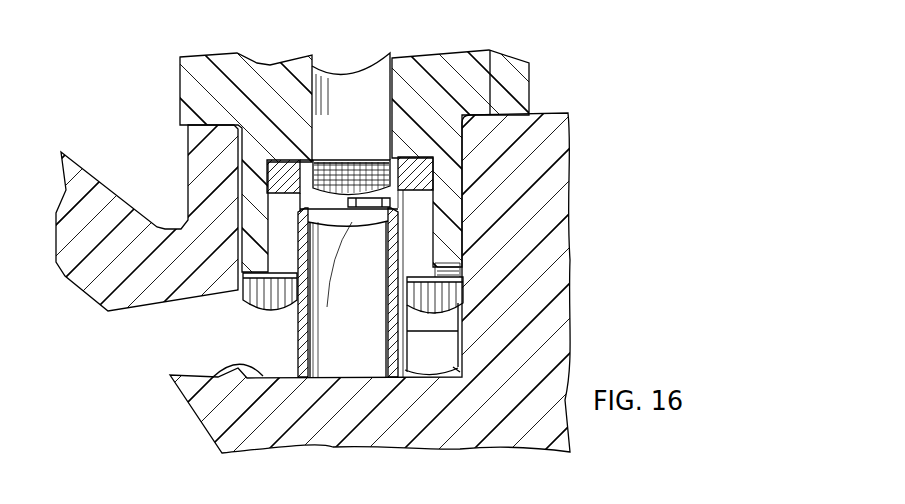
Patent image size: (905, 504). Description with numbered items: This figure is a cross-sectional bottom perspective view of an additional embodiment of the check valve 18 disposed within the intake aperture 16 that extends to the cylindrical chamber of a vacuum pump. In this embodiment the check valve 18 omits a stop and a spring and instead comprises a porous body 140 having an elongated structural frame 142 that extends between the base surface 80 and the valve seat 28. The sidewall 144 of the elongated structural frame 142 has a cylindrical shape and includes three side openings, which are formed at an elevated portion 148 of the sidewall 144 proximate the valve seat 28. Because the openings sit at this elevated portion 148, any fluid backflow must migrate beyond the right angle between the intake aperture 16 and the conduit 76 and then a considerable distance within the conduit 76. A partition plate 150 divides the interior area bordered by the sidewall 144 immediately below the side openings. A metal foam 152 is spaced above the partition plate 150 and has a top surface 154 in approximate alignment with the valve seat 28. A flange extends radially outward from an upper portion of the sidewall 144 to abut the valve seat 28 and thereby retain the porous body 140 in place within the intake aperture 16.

The intake aperture 16 is at (188, 340).
The check valve 18 is at (418, 247).
The valve seat 28 is at (395, 163).
The conduit 76 is at (355, 88).
The base surface 80 is at (205, 378).
The porous body 140 is at (296, 233).
The elongated structural frame 142 is at (396, 331).
The sidewall 144 is at (432, 339).
The elevated portion 148 is at (412, 195).
The partition plate 150 is at (291, 311).
The metal foam 152 is at (363, 168).
The top surface 154 is at (335, 162).